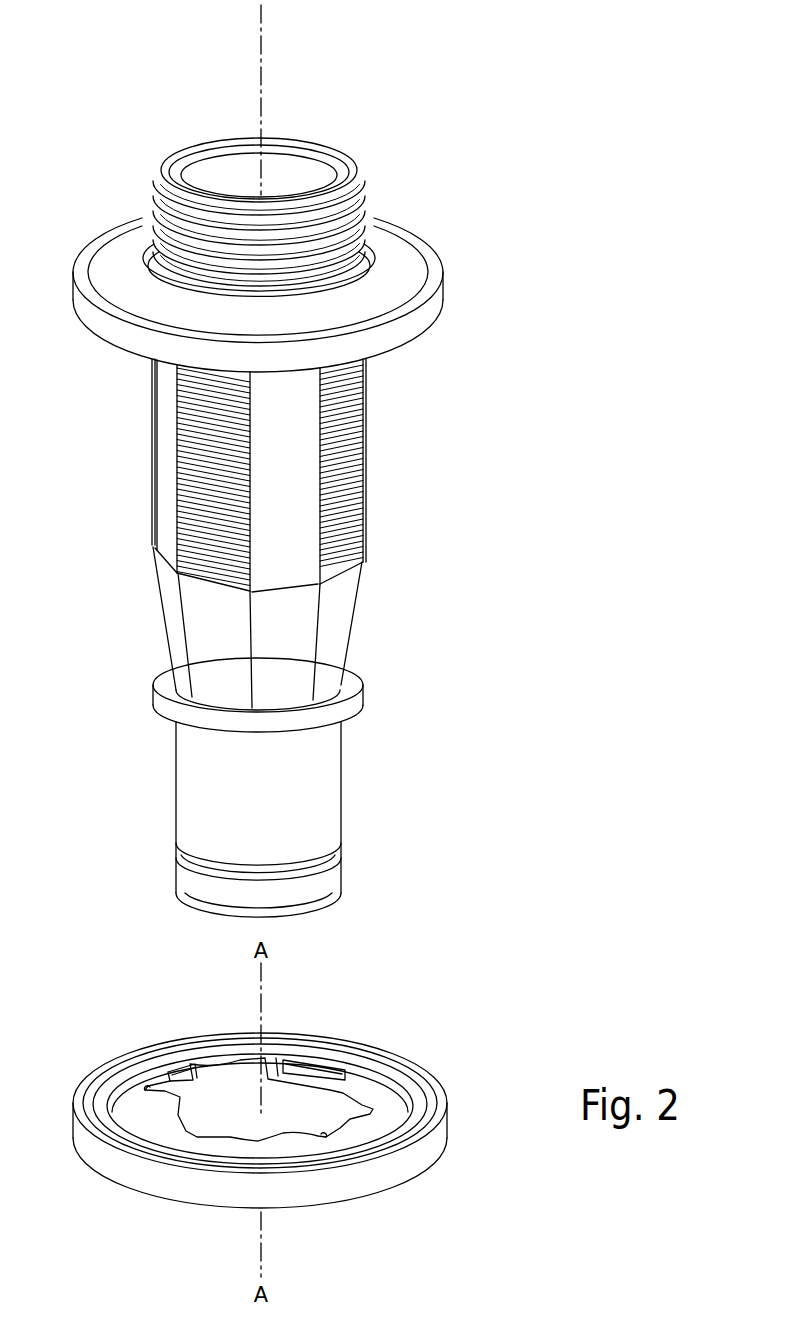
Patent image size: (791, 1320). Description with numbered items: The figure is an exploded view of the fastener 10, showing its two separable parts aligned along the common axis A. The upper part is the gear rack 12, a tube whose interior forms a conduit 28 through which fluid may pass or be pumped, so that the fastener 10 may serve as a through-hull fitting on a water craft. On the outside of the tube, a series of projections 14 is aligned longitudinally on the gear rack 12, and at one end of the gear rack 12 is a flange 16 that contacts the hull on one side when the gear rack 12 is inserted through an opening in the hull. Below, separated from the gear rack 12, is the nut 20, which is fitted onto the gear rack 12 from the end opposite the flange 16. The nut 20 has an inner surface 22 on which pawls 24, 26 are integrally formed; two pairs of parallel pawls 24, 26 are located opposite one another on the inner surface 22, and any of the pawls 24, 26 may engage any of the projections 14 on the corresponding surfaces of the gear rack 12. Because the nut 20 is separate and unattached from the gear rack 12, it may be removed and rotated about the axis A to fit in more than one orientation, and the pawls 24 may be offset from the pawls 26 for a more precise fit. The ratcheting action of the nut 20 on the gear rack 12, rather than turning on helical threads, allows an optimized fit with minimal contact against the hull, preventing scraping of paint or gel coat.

The fastener 10 is at (472, 126).
The gear rack 12 is at (282, 492).
The projections 14 is at (360, 391).
The flange 16 is at (432, 268).
The nut 20 is at (443, 1093).
The inner surface 22 is at (226, 1073).
The pawls 24 is at (167, 1084).
The pawls 26 is at (307, 1076).
The conduit 28 is at (298, 166).